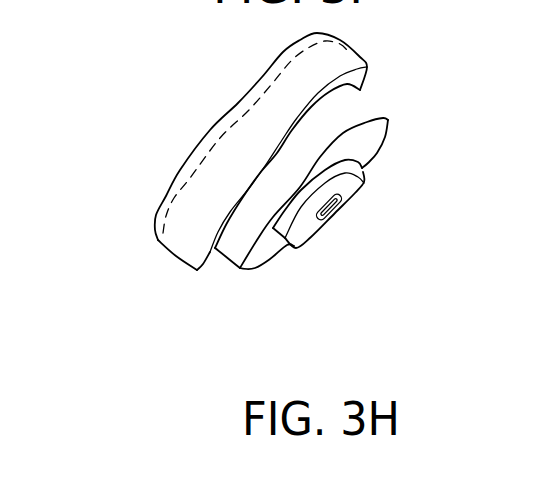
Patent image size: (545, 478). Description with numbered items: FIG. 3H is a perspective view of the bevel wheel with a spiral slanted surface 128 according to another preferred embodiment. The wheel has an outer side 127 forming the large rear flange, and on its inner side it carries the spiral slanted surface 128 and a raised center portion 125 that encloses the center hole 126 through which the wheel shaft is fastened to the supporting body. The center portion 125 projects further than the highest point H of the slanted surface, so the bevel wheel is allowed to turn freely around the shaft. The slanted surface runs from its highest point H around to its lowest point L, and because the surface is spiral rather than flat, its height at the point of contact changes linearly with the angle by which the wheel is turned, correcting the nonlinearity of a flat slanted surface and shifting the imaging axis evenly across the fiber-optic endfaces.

The center portion 125 is at (279, 243).
The center hole 126 is at (338, 208).
The outer side 127 is at (216, 120).
The spiral slanted surface 128 is at (257, 248).
The highest point H is at (388, 120).
The lowest point L is at (240, 270).